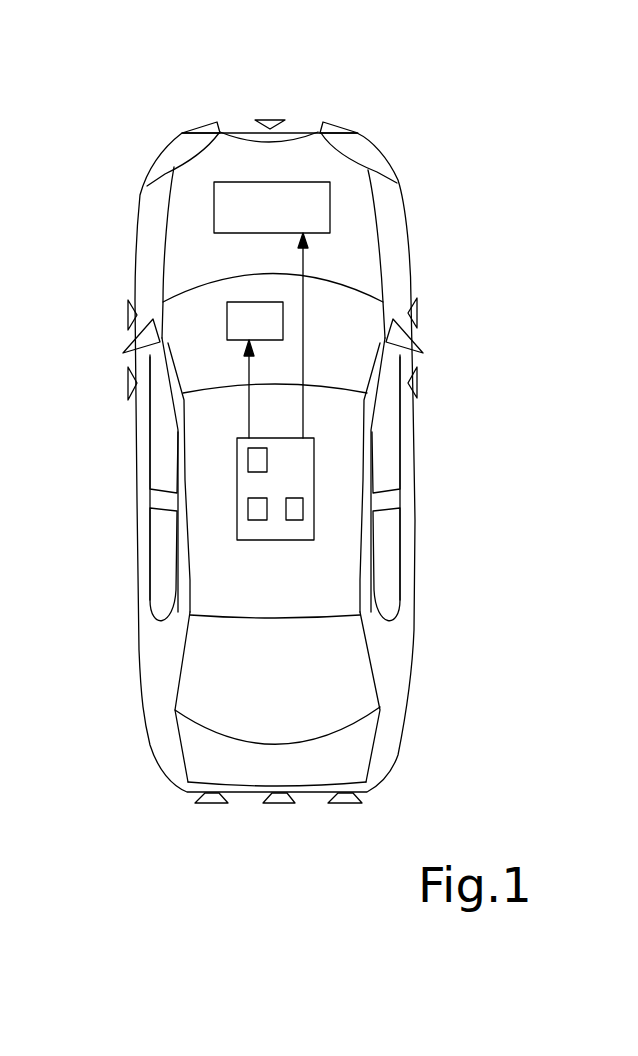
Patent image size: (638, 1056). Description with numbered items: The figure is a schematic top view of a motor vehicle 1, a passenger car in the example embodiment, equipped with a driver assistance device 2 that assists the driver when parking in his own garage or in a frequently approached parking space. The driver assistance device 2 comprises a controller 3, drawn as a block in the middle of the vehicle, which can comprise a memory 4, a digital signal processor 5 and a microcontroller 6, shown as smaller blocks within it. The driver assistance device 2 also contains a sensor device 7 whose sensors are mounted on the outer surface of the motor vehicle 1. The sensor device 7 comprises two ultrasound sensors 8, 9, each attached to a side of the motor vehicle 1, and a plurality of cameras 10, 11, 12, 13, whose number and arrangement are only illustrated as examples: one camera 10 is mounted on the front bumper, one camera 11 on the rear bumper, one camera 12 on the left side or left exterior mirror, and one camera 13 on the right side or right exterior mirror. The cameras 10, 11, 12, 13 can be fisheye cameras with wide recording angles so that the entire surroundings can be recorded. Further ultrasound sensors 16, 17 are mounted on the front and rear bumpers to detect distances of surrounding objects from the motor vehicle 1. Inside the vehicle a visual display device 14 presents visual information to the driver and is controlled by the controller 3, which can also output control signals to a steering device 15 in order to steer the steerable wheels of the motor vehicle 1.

The motor vehicle 1 is at (415, 683).
The driver assistance device 2 is at (216, 565).
The controller 3 is at (303, 480).
The memory 4 is at (303, 510).
The digital signal processor 5 is at (248, 510).
The microcontroller 6 is at (248, 460).
The sensor device 7 is at (442, 248).
The ultrasound sensor 8 is at (128, 314).
The ultrasound sensor 9 is at (417, 313).
The camera 10 is at (272, 118).
The camera 11 is at (280, 803).
The camera 12 is at (128, 383).
The camera 13 is at (417, 383).
The visual display device 14 is at (266, 340).
The steering device 15 is at (317, 197).
The ultrasound sensors 16 is at (198, 123).
The ultrasound sensors 17 is at (213, 803).